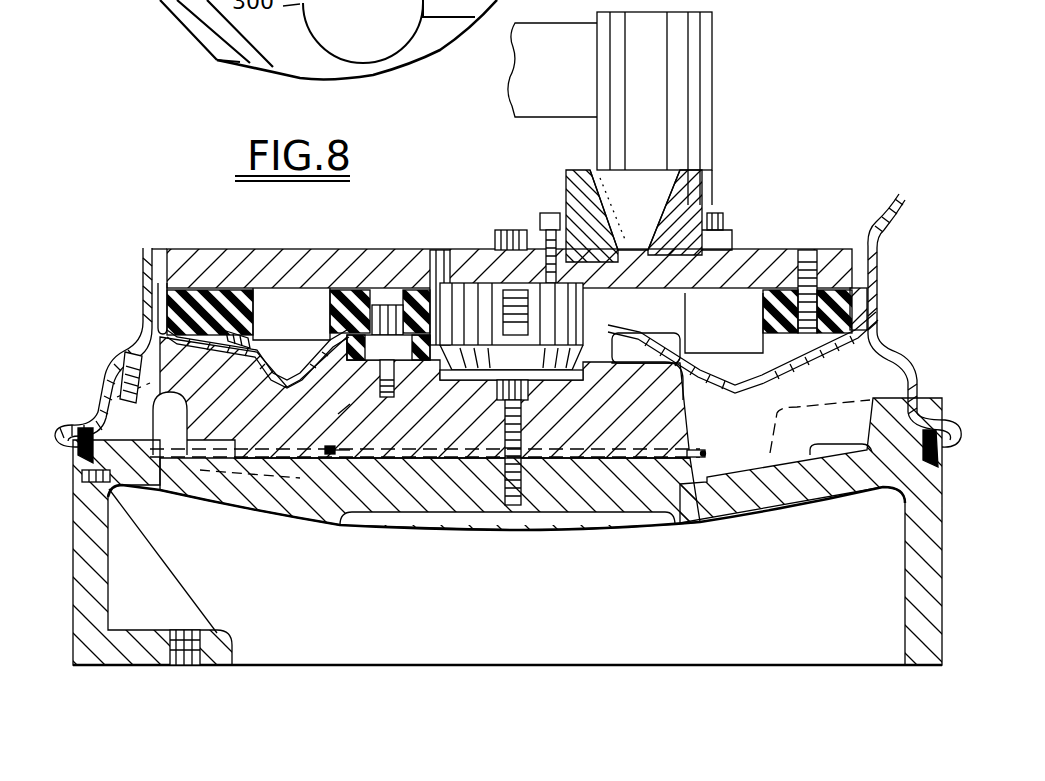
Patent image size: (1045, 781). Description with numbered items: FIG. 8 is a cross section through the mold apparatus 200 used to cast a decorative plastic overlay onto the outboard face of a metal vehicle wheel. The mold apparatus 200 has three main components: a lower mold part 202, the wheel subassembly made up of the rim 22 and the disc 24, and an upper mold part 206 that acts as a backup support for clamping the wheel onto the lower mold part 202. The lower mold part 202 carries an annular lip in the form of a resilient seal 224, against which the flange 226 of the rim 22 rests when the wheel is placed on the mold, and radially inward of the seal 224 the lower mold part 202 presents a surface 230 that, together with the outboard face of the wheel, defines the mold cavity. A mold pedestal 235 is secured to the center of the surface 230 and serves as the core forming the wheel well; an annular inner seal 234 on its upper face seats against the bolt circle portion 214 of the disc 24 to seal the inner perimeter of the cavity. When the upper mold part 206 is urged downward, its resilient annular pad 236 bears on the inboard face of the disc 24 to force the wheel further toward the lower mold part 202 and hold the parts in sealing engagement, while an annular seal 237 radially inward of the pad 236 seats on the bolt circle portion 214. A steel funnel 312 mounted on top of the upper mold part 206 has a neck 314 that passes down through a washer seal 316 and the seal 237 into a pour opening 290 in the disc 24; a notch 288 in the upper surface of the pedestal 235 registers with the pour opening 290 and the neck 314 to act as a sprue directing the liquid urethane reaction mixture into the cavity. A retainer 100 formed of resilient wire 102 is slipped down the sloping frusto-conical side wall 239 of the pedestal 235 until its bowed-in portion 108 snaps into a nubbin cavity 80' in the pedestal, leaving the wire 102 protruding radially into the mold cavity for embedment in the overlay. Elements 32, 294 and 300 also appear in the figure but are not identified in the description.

The rim 22 is at (884, 252).
The disc 24 is at (748, 390).
The nut 32 is at (251, 340).
The nubbin cavity 80' is at (477, 544).
The retainer 100 is at (702, 458).
The wire 102 is at (280, 487).
The bowed-in portion 108 is at (325, 449).
The mold apparatus 200 is at (198, 170).
The lower mold part 202 is at (76, 634).
The upper mold part 206 is at (275, 244).
The bolt circle portion 214 is at (333, 322).
The resilient seal 224 is at (92, 412).
The flange 226 is at (63, 415).
The surface 230 is at (264, 490).
The annular inner seal 234 is at (437, 288).
The mold pedestal 235 is at (363, 470).
The resilient annular pad 236 is at (222, 298).
The annular seal 237 is at (357, 290).
The frusto-conical side wall 239 is at (340, 412).
The notch 288 is at (672, 368).
The pour opening 290 is at (646, 348).
The boss 294 is at (227, 395).
The spindle 300 is at (712, 52).
The steel funnel 312 is at (566, 176).
The neck 314 is at (643, 310).
The washer seal 316 is at (705, 202).